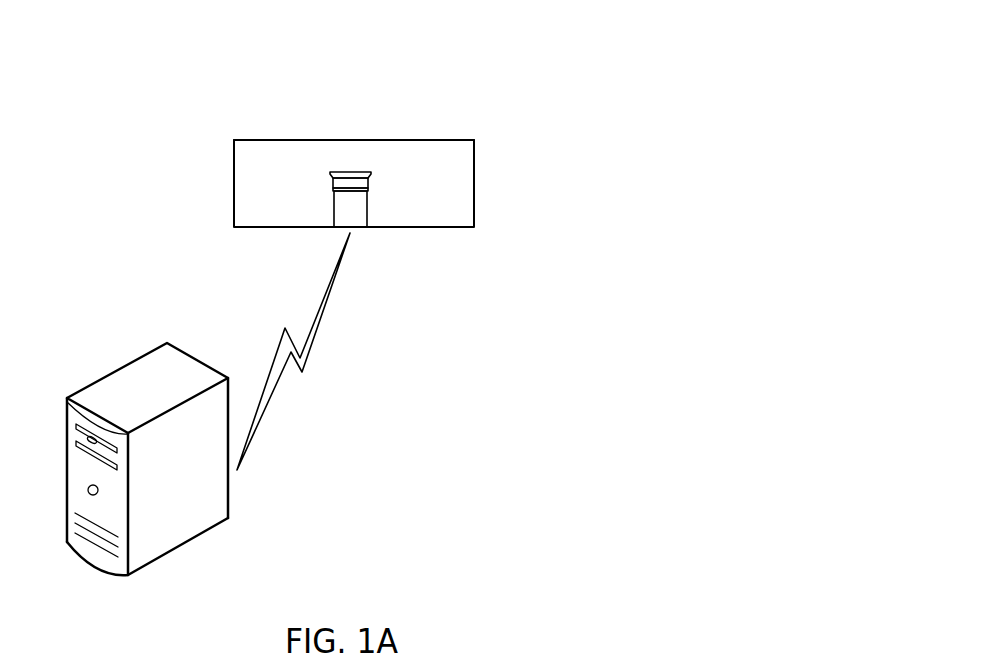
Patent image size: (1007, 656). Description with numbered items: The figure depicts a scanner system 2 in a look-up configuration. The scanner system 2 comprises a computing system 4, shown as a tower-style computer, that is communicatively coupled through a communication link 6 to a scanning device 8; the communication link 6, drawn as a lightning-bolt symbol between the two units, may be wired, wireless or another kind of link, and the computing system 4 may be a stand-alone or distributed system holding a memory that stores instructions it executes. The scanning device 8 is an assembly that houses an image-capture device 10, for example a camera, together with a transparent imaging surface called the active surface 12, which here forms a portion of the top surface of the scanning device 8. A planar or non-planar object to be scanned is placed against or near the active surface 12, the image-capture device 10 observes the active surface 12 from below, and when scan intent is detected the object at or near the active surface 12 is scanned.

The scanner system 2 is at (584, 63).
The computing system 4 is at (225, 527).
The communication link 6 is at (318, 340).
The scanning device 8 is at (486, 131).
The image-capture device 10 is at (374, 205).
The active surface 12 is at (337, 94).